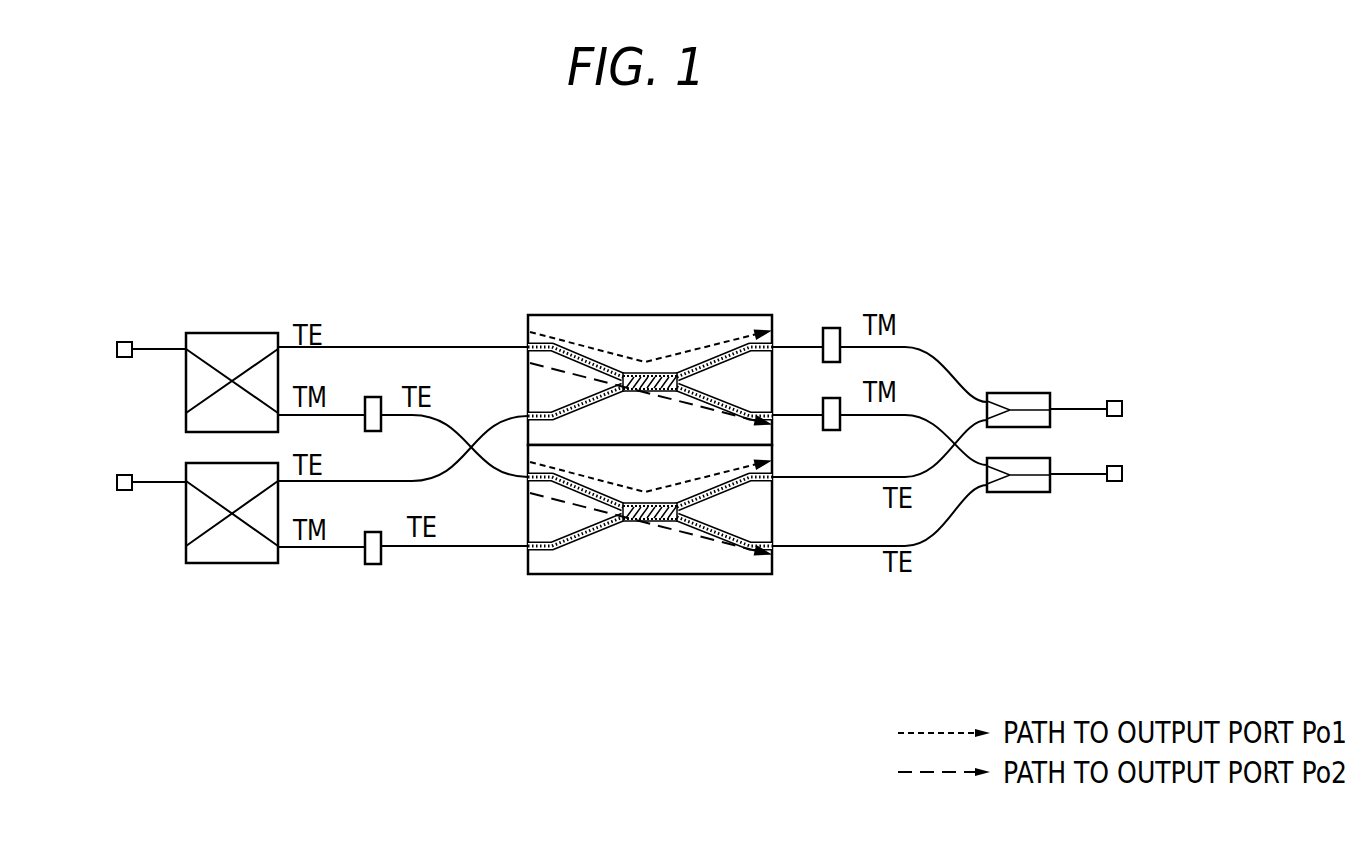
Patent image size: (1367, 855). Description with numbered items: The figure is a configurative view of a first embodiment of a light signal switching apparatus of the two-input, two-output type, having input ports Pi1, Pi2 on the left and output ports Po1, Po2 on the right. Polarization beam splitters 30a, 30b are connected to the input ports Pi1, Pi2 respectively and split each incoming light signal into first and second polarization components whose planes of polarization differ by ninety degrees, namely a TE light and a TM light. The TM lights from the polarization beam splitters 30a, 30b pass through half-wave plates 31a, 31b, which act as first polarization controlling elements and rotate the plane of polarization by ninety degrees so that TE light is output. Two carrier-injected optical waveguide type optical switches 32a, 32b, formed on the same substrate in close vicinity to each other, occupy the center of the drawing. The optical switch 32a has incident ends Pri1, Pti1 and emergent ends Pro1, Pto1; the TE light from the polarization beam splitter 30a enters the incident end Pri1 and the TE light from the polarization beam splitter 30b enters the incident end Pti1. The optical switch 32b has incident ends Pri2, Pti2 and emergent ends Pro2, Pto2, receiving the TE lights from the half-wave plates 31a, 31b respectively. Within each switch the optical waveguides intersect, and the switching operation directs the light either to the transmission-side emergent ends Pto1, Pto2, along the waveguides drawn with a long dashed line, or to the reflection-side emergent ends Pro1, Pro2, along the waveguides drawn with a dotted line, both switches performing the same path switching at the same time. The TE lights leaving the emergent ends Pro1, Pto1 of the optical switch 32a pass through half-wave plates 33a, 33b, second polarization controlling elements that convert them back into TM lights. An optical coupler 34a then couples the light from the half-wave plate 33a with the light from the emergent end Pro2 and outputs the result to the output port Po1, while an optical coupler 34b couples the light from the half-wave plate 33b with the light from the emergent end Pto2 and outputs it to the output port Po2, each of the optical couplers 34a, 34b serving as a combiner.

The polarization beam splitter 30a is at (223, 333).
The polarization beam splitter 30b is at (230, 563).
The λ/2 plate 31a is at (372, 397).
The λ/2 plate 31b is at (373, 564).
The first carrier-injected optical waveguide type optical switch 32a is at (652, 315).
The second carrier-injected optical waveguide type optical switch 32b is at (648, 574).
The λ/2 plate 33a is at (831, 328).
The λ/2 plate 33b is at (831, 398).
The optical coupler 34a is at (1020, 393).
The optical coupler 34b is at (1017, 492).
The input port Pi1 is at (127, 348).
The input port Pi2 is at (127, 482).
The output port Po1 is at (1112, 408).
The output port Po2 is at (1112, 475).
The incident end Pri1 is at (528, 347).
The incident end Pti1 is at (528, 416).
The incident end Pri2 is at (528, 477).
The incident end Pti2 is at (528, 546).
The emergent end Pro1 is at (772, 347).
The emergent end Pto1 is at (772, 415).
The emergent end Pro2 is at (772, 477).
The emergent end Pto2 is at (772, 546).